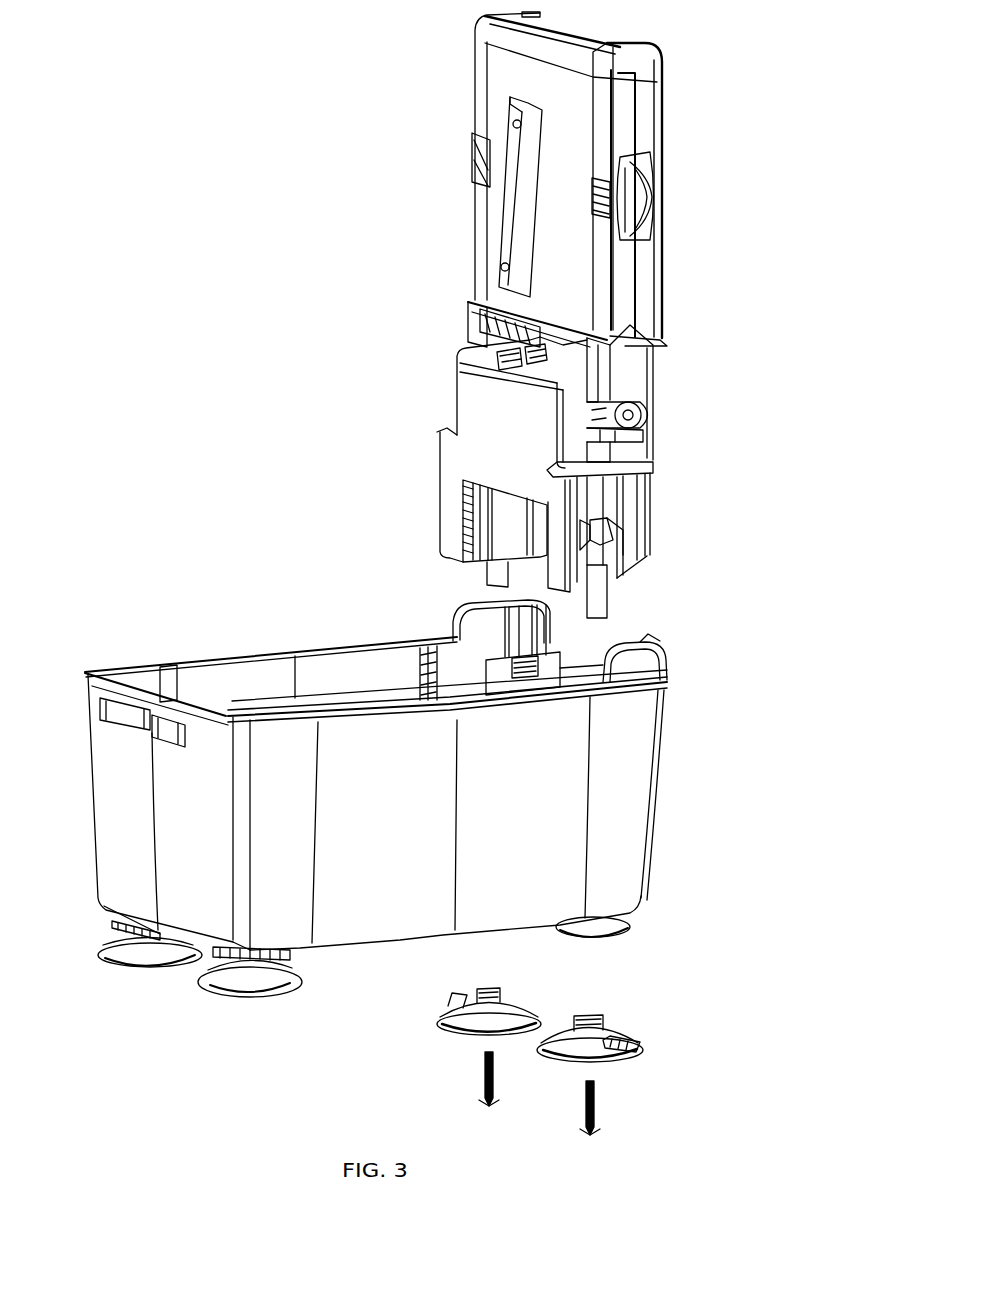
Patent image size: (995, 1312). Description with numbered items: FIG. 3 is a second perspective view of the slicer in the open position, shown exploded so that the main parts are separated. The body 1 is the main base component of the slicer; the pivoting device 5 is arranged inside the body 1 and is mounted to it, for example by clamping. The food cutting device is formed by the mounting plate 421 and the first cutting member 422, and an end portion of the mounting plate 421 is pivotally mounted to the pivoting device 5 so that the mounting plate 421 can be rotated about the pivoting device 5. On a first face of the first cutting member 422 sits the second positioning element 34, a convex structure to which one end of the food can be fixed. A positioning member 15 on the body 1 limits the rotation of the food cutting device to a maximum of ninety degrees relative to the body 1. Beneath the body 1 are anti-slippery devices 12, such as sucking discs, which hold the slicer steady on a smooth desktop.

The body 1 is at (633, 835).
The anti-slippery device 12 is at (613, 1038).
The positioning member 15 is at (643, 672).
The pivoting device 5 is at (503, 418).
The second positioning element 34 is at (540, 106).
The mounting plate 421 is at (647, 132).
The first cutting member 422 is at (513, 85).